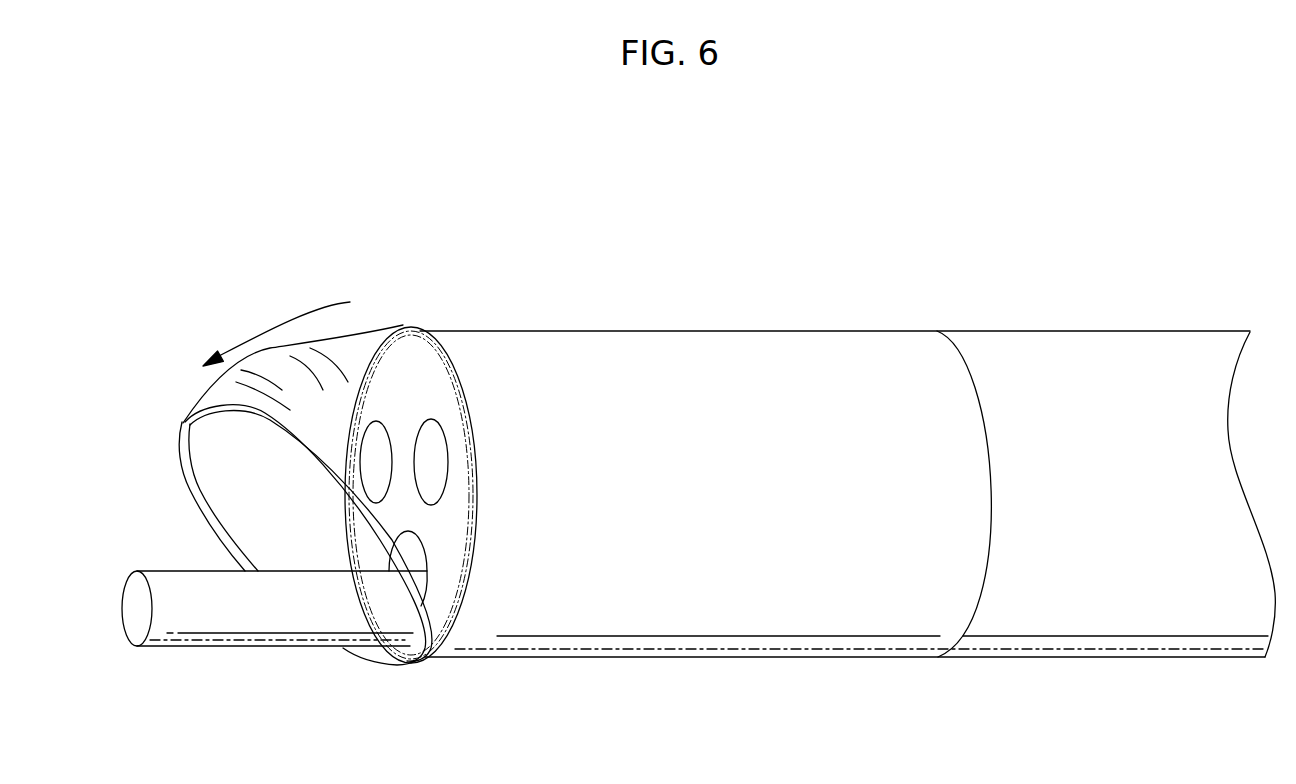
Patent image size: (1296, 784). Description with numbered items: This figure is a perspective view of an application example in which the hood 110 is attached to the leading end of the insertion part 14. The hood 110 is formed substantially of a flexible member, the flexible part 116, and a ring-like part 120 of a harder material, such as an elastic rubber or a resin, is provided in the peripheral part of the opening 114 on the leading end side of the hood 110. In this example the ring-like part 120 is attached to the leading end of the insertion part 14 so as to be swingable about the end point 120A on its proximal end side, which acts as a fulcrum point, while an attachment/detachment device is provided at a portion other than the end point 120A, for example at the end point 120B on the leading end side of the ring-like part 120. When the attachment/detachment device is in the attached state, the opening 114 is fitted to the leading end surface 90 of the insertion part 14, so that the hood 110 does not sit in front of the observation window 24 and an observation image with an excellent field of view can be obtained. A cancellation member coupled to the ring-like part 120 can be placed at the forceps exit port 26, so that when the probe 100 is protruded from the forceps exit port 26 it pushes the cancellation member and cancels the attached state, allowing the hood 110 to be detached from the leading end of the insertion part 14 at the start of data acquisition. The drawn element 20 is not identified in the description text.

The insertion part 14 is at (1042, 307).
The flexible part 116 is at (725, 310).
The ring-like part 120 is at (333, 505).
The end point on the proximal end side 120A is at (400, 718).
The end point on the leading end side 120B is at (455, 292).
The hood 110 is at (162, 432).
The probe 100 is at (152, 567).
The opening 114 is at (283, 663).
The leading end surface 90 is at (402, 364).
The channel opening 20 is at (380, 449).
The observation window 24 is at (438, 448).
The forceps exit port 26 is at (493, 547).